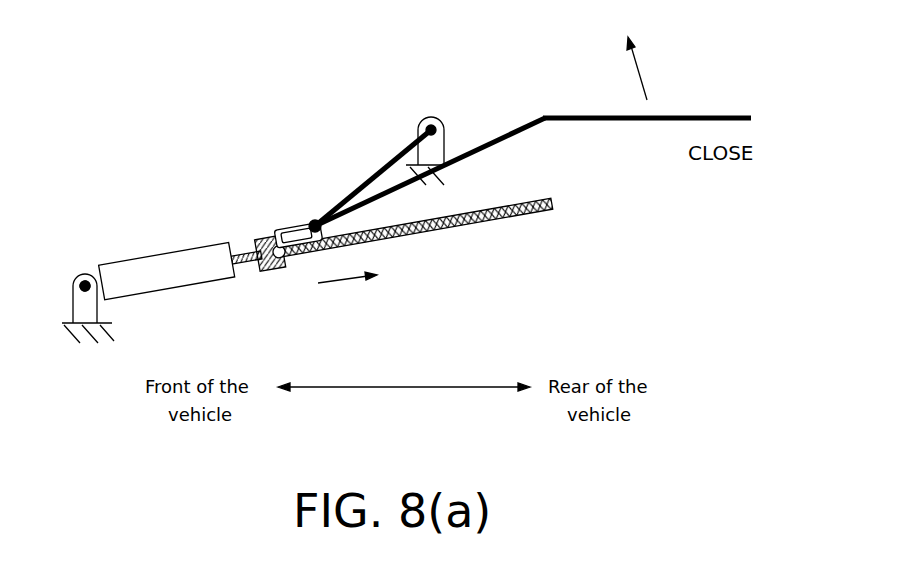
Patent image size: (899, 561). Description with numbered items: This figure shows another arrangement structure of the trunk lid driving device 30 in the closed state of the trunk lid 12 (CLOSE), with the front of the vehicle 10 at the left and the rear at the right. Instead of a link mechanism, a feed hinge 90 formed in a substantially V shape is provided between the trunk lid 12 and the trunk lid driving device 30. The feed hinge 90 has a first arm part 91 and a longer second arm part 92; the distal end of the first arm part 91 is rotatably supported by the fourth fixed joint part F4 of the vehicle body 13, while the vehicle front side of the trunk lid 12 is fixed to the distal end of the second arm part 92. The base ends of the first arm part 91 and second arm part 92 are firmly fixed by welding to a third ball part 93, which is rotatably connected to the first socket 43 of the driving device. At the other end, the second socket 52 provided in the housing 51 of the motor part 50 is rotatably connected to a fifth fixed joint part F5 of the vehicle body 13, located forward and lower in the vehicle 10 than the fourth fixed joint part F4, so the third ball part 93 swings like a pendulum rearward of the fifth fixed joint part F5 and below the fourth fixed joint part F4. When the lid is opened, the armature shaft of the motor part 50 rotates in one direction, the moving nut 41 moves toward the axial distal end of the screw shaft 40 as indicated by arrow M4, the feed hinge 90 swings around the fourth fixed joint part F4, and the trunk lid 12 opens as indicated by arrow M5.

The vehicle 10 is at (588, 268).
The trunk lid 12 is at (605, 121).
The vehicle body 13 is at (90, 342).
The trunk lid driving device 30 is at (312, 231).
The screw shaft 40 is at (463, 227).
The moving nut 41 is at (265, 270).
The first socket 43 is at (305, 252).
The motor part 50 is at (163, 254).
The housing 51 is at (185, 257).
The second socket 52 is at (128, 258).
The feed hinge 90 is at (469, 132).
The first arm part 91 is at (380, 167).
The second arm part 92 is at (500, 140).
The third ball part 93 is at (313, 217).
The fourth fixed joint part F4 is at (420, 127).
The fifth fixed joint part F5 is at (66, 328).
The arrow M4 is at (363, 275).
The arrow M5 is at (655, 68).